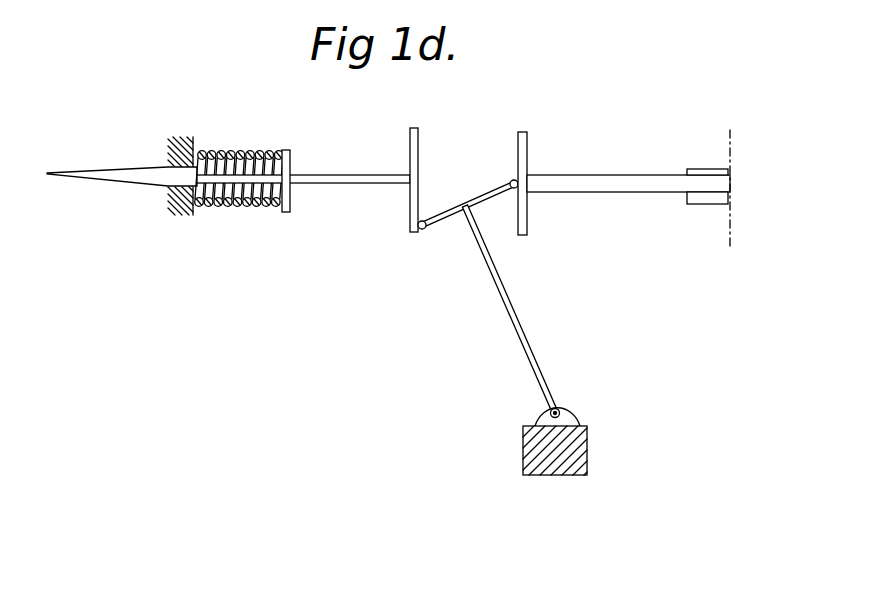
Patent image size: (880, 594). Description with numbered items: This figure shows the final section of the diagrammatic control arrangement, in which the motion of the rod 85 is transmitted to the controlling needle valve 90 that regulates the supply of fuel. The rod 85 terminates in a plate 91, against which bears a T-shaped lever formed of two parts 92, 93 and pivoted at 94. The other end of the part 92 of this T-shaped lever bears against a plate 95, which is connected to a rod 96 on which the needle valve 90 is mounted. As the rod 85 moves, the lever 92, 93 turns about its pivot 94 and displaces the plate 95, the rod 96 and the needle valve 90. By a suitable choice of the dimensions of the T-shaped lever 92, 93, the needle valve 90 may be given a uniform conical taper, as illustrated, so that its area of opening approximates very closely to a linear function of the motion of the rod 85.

The rod 85 is at (655, 185).
The needle valve 90 is at (118, 167).
The plate 91 is at (527, 207).
The part of T-shaped lever 92 is at (446, 218).
The part of T-shaped lever 93 is at (515, 333).
The pivot 94 is at (550, 413).
The plate 95 is at (412, 203).
The rod 96 is at (322, 177).